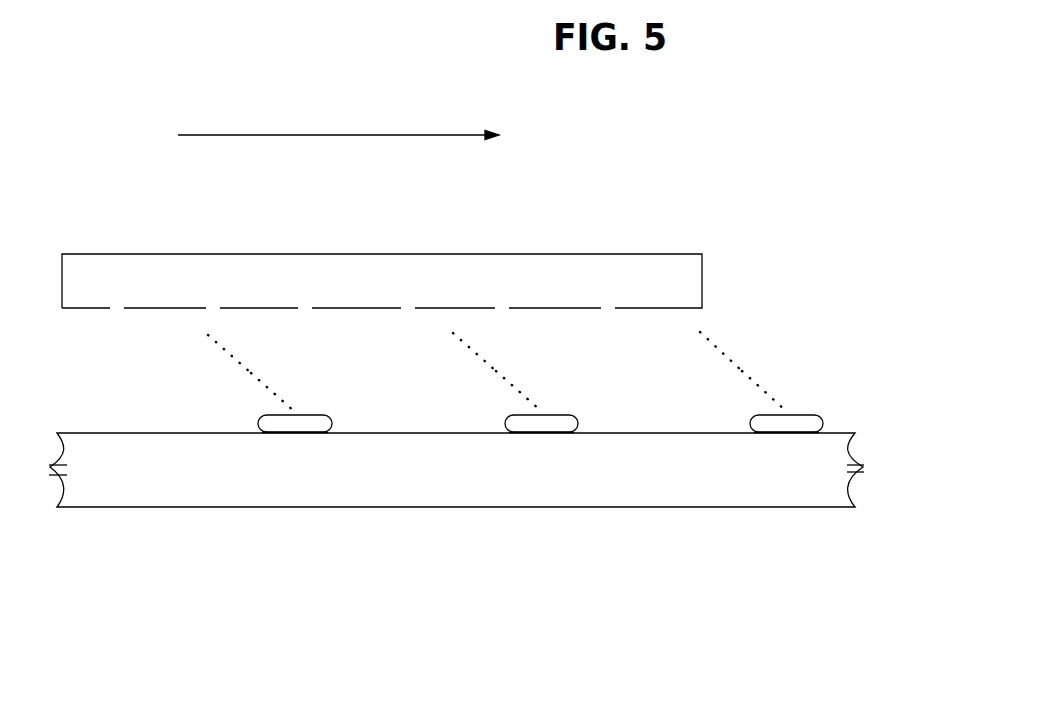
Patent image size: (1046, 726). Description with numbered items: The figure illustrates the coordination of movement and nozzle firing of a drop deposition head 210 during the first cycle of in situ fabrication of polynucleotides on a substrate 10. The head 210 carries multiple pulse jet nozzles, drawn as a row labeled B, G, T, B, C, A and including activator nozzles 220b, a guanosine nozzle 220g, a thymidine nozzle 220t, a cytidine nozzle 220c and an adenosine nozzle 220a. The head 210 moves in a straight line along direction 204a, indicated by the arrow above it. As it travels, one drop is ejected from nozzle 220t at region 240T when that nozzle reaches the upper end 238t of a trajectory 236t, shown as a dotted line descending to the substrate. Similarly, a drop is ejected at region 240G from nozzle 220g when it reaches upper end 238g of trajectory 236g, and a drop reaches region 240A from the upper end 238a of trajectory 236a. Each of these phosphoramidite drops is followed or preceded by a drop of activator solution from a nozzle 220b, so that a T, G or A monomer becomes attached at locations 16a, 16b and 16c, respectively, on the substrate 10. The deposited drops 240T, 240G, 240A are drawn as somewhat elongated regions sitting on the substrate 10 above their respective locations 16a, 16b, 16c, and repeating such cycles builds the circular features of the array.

The direction 204a is at (297, 135).
The head 210 is at (88, 242).
The nozzle 220b is at (117, 307).
The nozzle 220g is at (213, 307).
The nozzle 220t is at (305, 307).
The nozzle 220c is at (502, 307).
The nozzle 220a is at (608, 307).
The upper end 238t is at (203, 345).
The trajectory 236t is at (253, 383).
The region 240T is at (303, 413).
The upper end 238g is at (450, 342).
The trajectory 236g is at (500, 382).
The region 240G is at (548, 412).
The upper end 238a is at (697, 342).
The trajectory 236a is at (745, 378).
The region 240A is at (797, 412).
The substrate 10 is at (403, 477).
The feature location 16a is at (275, 433).
The feature location 16b is at (553, 433).
The feature location 16c is at (787, 433).